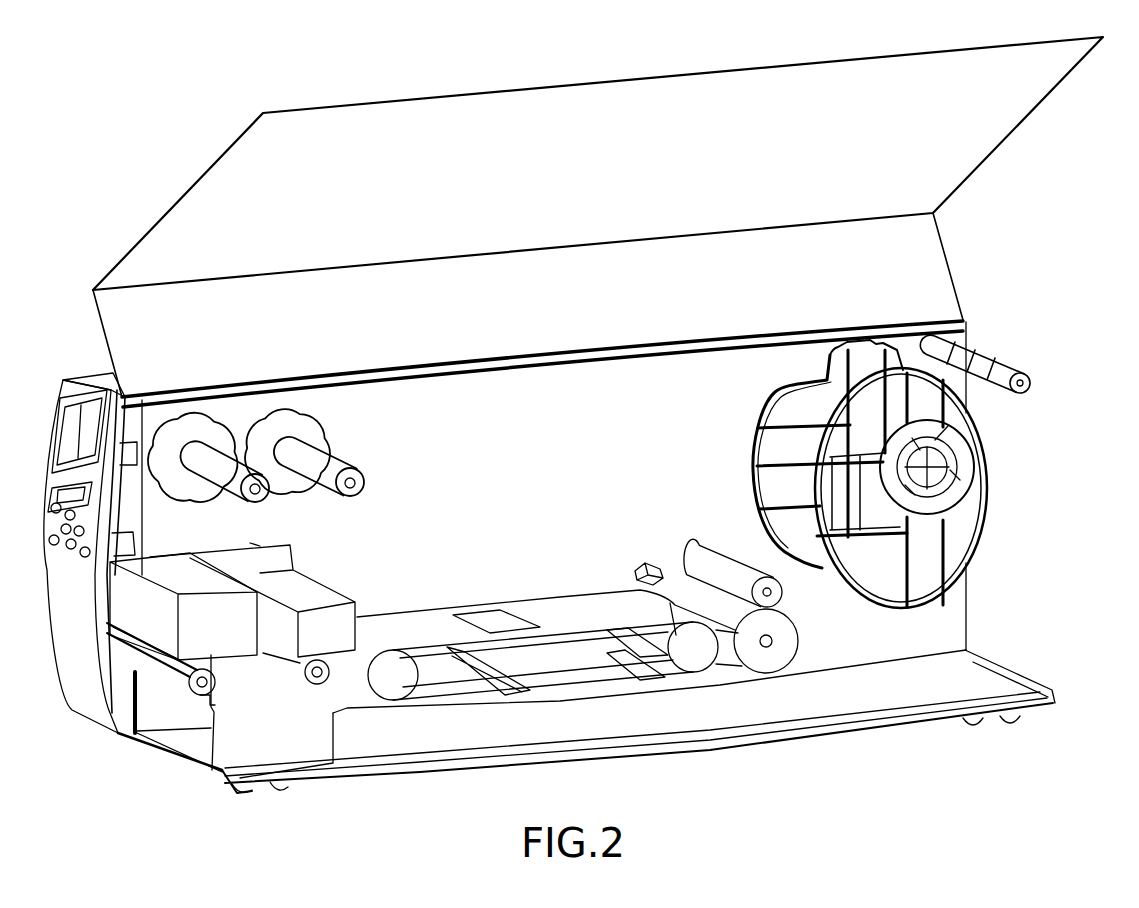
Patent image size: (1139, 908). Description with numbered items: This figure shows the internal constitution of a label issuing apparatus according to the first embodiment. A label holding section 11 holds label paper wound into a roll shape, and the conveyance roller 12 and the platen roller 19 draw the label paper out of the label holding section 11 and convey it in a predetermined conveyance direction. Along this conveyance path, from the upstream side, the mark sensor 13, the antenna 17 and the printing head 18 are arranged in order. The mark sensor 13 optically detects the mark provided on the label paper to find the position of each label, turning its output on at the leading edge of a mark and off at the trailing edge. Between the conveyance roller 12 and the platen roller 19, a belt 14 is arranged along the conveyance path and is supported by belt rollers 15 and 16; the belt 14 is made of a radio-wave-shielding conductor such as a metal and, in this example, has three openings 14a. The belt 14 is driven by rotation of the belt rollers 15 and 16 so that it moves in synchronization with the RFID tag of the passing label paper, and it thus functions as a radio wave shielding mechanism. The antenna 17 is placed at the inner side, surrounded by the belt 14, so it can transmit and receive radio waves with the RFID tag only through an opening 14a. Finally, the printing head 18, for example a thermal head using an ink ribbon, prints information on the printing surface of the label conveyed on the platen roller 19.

The label holding section 11 is at (802, 413).
The conveyance roller 12 is at (806, 642).
The mark sensor 13 is at (643, 562).
The belt 14 is at (587, 600).
The opening 14a is at (487, 605).
The belt roller 15 is at (396, 688).
The belt roller 16 is at (710, 663).
The antenna 17 is at (568, 673).
The printing head 18 is at (320, 597).
The platen roller 19 is at (287, 653).